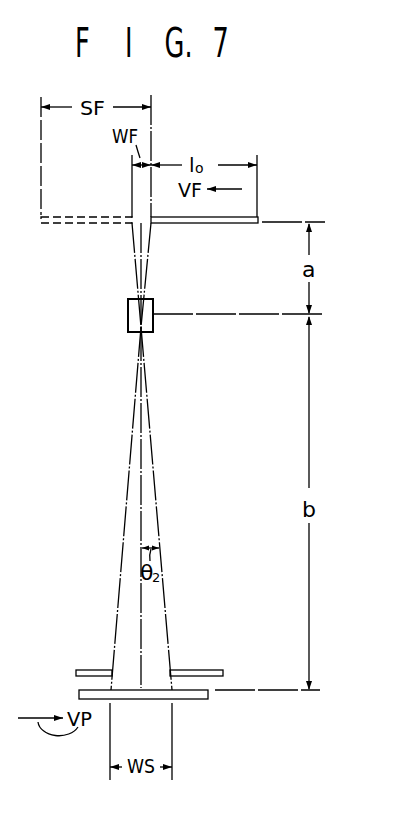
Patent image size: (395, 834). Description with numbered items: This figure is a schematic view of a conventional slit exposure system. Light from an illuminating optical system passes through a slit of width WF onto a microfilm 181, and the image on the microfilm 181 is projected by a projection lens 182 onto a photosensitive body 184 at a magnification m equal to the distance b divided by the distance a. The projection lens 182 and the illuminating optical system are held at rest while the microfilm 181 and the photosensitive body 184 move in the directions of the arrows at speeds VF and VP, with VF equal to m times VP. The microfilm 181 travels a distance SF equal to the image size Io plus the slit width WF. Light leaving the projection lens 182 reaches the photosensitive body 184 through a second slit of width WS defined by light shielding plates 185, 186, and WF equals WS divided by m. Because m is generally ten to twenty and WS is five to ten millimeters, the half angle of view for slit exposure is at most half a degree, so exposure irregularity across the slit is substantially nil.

The microfilm 181 is at (232, 223).
The projection lens 182 is at (153, 306).
The photosensitive body 184 is at (193, 699).
The light shielding plate 185 is at (92, 669).
The light shielding plate 186 is at (195, 669).